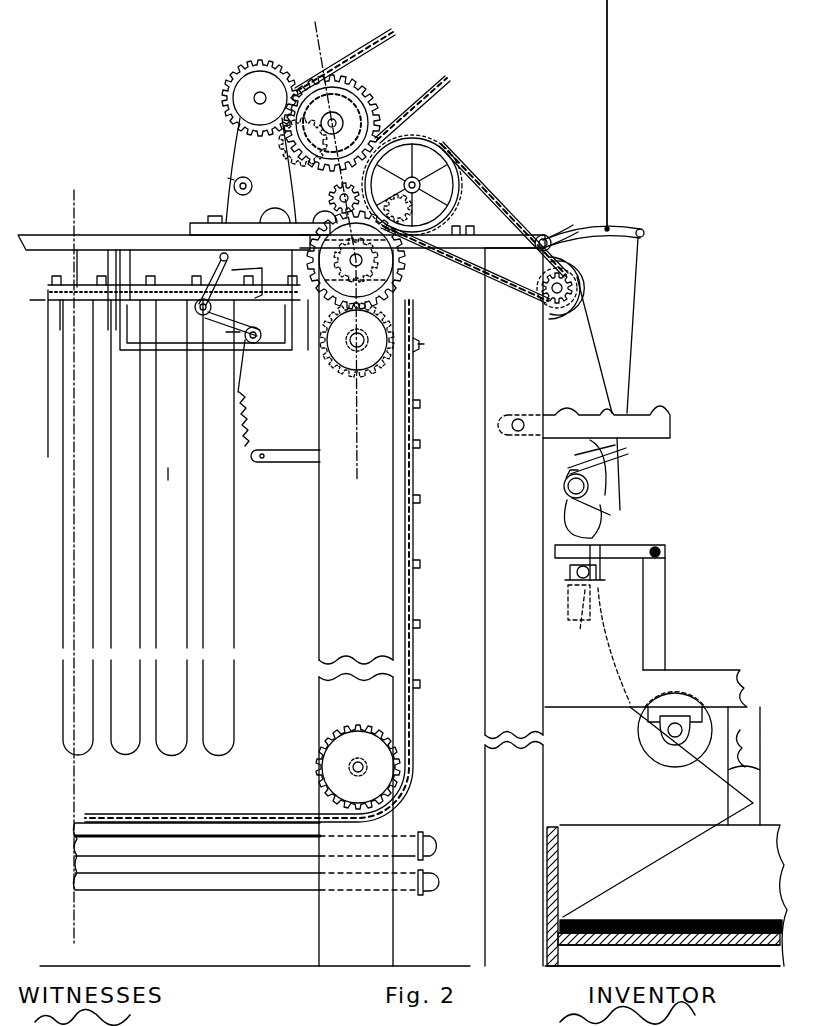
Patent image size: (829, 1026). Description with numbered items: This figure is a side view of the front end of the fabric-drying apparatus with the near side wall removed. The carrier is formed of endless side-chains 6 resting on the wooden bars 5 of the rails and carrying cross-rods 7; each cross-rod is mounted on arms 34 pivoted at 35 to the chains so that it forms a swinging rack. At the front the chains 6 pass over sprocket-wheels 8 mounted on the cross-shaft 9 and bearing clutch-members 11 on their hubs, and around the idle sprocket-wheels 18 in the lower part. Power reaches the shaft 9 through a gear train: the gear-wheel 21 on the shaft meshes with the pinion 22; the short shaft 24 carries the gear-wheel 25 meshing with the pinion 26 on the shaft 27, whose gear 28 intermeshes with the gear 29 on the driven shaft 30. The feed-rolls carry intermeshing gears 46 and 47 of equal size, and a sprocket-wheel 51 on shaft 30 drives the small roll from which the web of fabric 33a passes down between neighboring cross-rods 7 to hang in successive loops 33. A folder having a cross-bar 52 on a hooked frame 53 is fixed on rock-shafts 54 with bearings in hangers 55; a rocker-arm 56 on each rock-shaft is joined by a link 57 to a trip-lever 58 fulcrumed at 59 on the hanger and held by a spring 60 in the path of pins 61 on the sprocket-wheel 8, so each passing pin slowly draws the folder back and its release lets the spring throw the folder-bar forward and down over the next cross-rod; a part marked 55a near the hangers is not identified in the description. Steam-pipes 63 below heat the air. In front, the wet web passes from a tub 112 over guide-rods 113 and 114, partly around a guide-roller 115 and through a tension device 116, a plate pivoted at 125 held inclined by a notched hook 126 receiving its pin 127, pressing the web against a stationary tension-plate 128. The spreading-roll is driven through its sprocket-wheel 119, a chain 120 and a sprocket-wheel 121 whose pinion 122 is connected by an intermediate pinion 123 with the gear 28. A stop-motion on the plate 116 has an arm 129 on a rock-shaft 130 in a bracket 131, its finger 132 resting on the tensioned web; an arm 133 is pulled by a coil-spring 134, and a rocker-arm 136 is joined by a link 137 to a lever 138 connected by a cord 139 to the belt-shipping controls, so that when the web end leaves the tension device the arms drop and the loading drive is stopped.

The wooden bar 5 is at (36, 302).
The endless side-chains 6 is at (440, 607).
The cross-rods 7 is at (54, 278).
The sprocket-wheels 8 is at (310, 358).
The cross-shaft 9 is at (333, 372).
The clutch-members 11 is at (334, 252).
The sprocket-wheels 18 is at (318, 766).
The gear-wheel 21 is at (386, 330).
The pinion 22 is at (400, 298).
The short shaft 24 is at (356, 260).
The gear-wheel 25 is at (380, 262).
The pinion 26 is at (334, 200).
The shaft 27 is at (336, 176).
The gear 28 is at (290, 190).
The gear 29 is at (385, 105).
The shaft 30 is at (242, 141).
The loops 33 is at (111, 532).
The web of fabric 33a is at (187, 517).
The arms 34 is at (405, 408).
The pivotal connection 35 is at (421, 403).
The gear 46 is at (282, 72).
The gear 47 is at (331, 75).
The sprocket-wheel 51 is at (449, 88).
The folder-bar 52 is at (350, 86).
The frame 53 is at (221, 253).
The rock-shafts 54 is at (116, 290).
The hangers 55 is at (182, 300).
The bracket 55a is at (250, 276).
The rocker-arm 56 is at (225, 322).
The link 57 is at (238, 378).
The trip-lever 58 is at (256, 345).
The fulcrum 59 is at (240, 365).
The spring 60 is at (248, 426).
The pins 61 is at (421, 350).
The steam-pipes 63 is at (256, 893).
The tub 112 is at (597, 826).
The guide-rod 113 is at (748, 800).
The guide-rod 114 is at (750, 790).
The guide-roller 115 is at (636, 762).
The tension device 116 is at (578, 620).
The sprocket-wheel 119 is at (575, 263).
The chain 120 is at (522, 229).
The sprocket-wheel 121 is at (470, 186).
The pinion 122 is at (440, 168).
The intermediate pinion 123 is at (441, 210).
The pivot mounting 125 is at (568, 573).
The hook 126 is at (662, 556).
The pin 127 is at (555, 554).
The stationary tension-plate 128 is at (612, 613).
The arm 129 is at (576, 452).
The rock-shaft 130 is at (564, 485).
The bracket 131 is at (570, 516).
The finger 132 is at (603, 425).
The arm 133 is at (580, 462).
The coil-spring 134 is at (622, 486).
The rocker-arm 136 is at (575, 497).
The link 137 is at (640, 284).
The lever 138 is at (624, 222).
The cord 139 is at (609, 147).